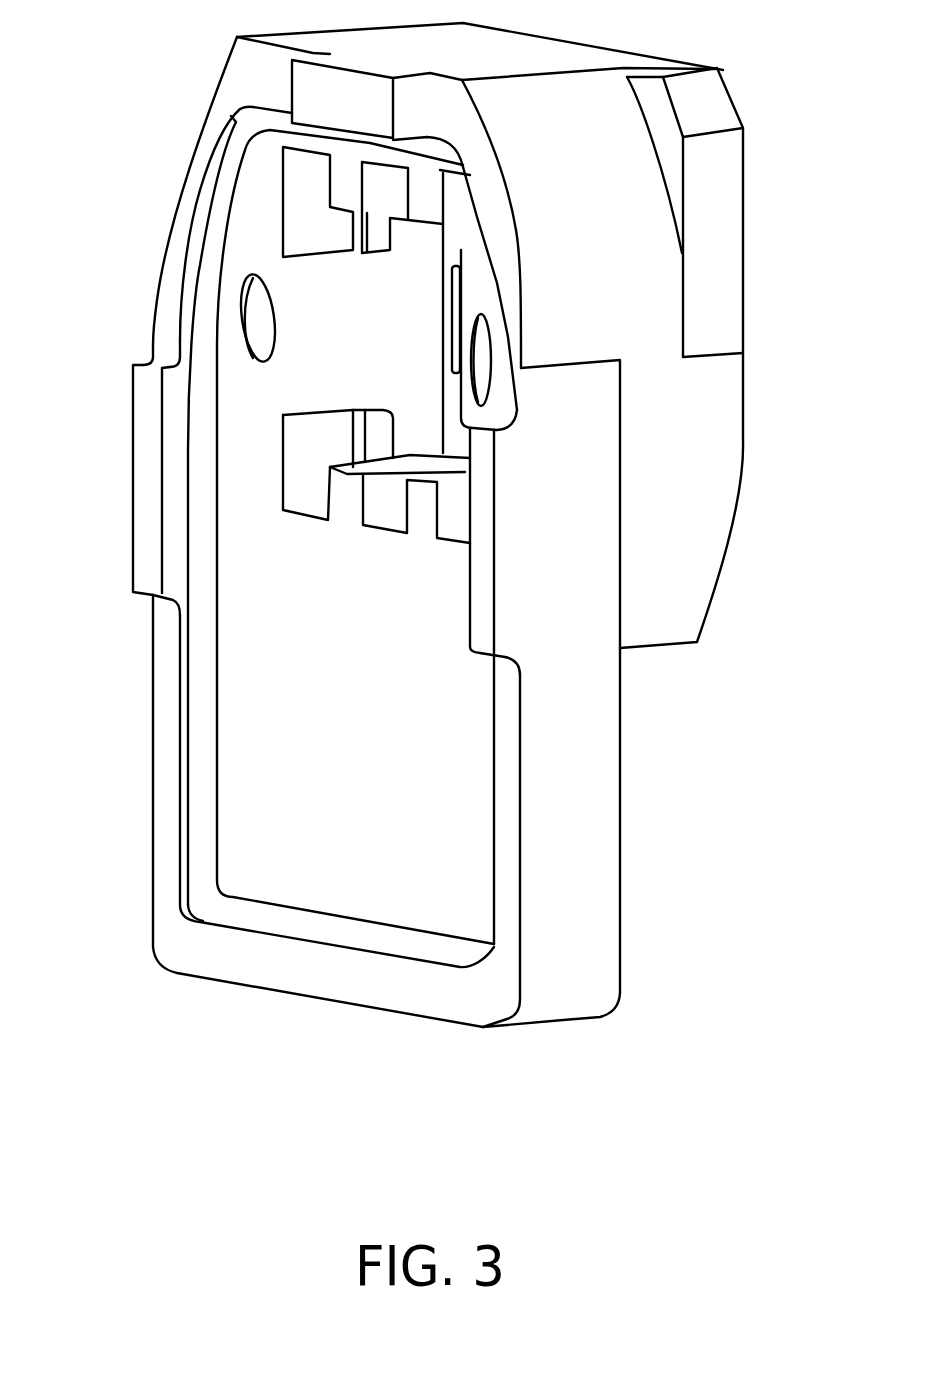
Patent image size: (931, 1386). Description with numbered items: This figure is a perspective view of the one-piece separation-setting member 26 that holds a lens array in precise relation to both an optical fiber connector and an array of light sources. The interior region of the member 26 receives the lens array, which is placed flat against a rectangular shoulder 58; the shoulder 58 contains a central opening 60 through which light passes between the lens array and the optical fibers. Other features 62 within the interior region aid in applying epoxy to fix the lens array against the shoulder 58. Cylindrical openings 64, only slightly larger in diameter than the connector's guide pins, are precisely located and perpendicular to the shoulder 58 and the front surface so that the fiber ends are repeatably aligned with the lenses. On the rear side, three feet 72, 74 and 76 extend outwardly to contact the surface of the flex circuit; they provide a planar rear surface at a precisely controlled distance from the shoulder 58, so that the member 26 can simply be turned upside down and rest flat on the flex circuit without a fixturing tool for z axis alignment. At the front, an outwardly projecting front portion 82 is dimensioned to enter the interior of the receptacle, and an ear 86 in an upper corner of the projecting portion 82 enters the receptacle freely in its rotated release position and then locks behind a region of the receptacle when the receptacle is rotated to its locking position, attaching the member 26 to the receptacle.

The separation-setting member 26 is at (429, 513).
The rectangular shoulder 58 is at (455, 268).
The central opening 60 is at (452, 243).
The features 62 is at (297, 210).
The cylindrical openings 64 is at (245, 318).
The foot 72 is at (147, 483).
The foot 74 is at (323, 93).
The foot 76 is at (482, 613).
The outwardly projecting front portion 82 is at (652, 637).
The ear 86 is at (710, 102).